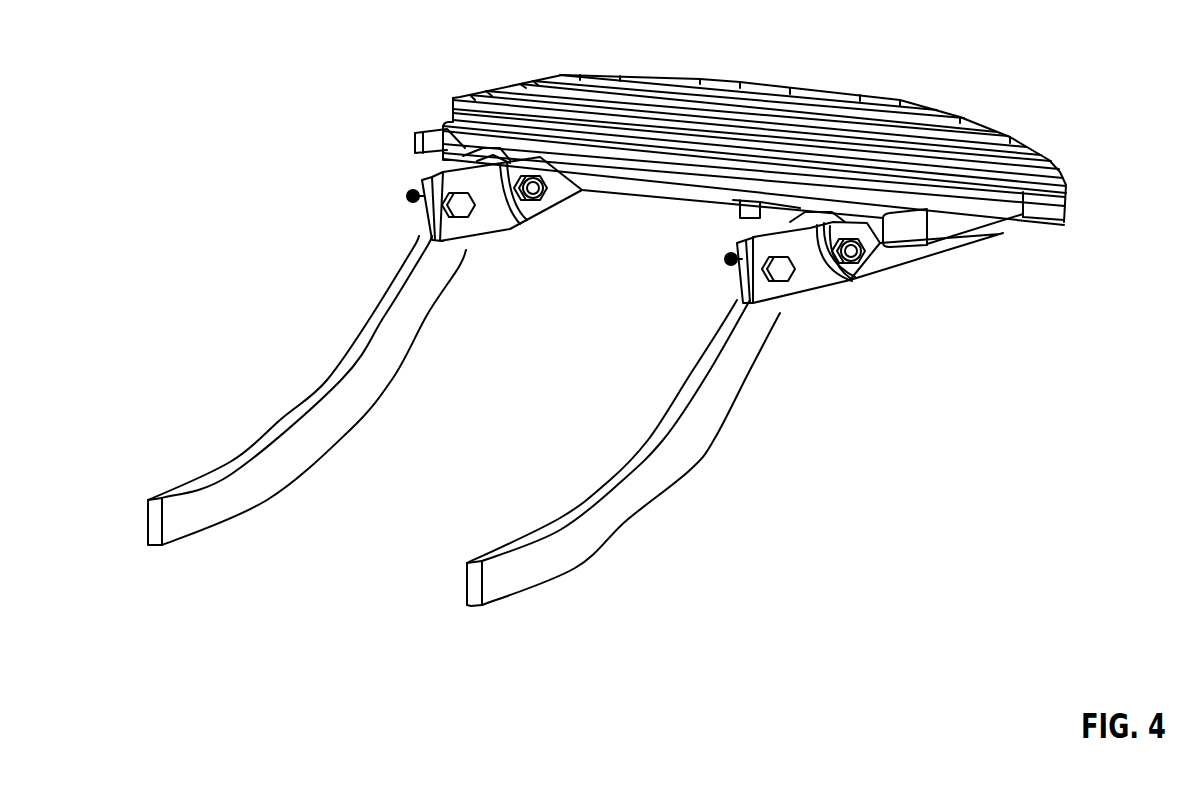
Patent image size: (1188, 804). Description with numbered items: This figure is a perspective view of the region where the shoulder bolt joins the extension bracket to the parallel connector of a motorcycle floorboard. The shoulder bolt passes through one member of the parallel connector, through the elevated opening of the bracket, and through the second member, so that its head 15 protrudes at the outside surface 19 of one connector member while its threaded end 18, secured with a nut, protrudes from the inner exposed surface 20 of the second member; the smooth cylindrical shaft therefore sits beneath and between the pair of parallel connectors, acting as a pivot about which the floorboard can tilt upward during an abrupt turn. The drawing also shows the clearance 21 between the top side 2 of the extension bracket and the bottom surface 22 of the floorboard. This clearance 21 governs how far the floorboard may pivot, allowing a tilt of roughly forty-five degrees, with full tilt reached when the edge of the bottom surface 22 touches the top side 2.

The top side 2 is at (785, 283).
The head 15 is at (860, 264).
The threaded end 18 is at (538, 198).
The outside surface 19 is at (843, 268).
The inner exposed surface 20 is at (528, 214).
The clearance 21 is at (422, 147).
The bottom surface 22 is at (858, 252).